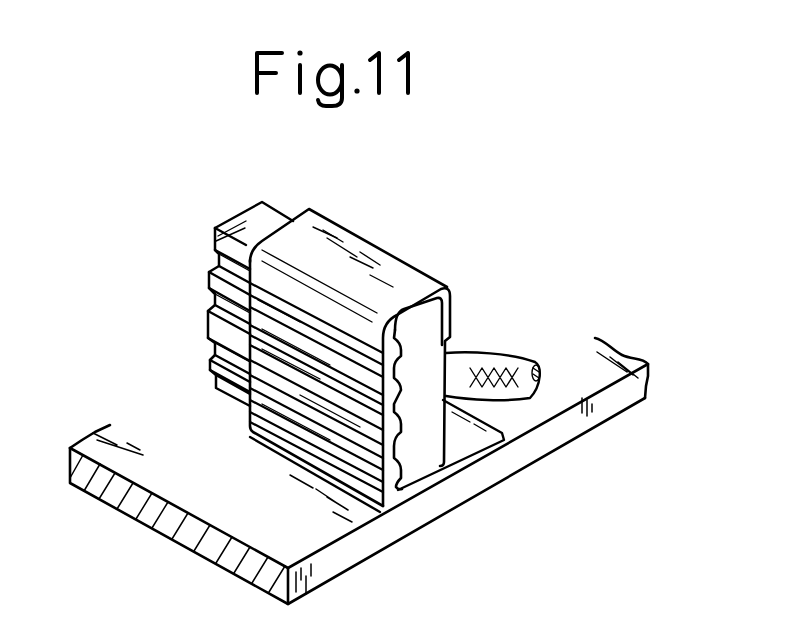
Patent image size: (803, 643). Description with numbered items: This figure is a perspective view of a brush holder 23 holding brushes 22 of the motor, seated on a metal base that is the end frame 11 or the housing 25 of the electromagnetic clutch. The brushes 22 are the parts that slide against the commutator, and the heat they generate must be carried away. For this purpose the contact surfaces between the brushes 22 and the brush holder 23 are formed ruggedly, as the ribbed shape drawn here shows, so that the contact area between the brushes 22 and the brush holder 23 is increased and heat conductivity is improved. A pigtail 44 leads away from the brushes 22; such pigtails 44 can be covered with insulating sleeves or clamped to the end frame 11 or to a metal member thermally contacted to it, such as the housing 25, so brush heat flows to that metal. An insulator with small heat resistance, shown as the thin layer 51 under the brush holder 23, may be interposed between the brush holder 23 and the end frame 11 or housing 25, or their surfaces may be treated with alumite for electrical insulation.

The end frame 11 is at (540, 445).
The housing 25 is at (359, 471).
The brushes 22 is at (268, 208).
The brush holder 23 is at (400, 259).
The pigtails 44 is at (492, 352).
The mounting plate 51 is at (352, 490).